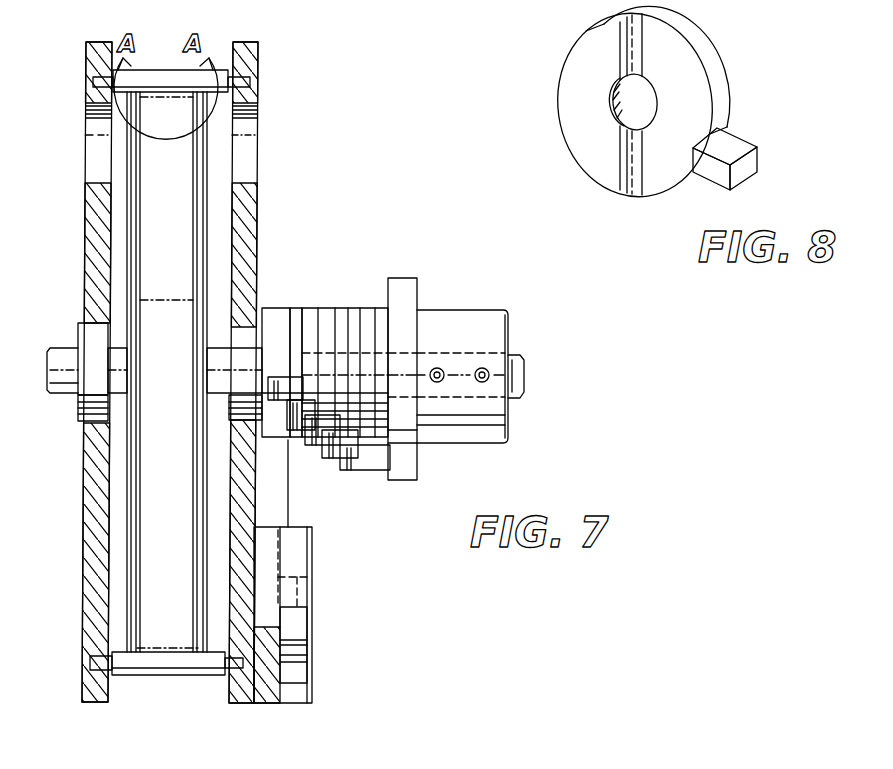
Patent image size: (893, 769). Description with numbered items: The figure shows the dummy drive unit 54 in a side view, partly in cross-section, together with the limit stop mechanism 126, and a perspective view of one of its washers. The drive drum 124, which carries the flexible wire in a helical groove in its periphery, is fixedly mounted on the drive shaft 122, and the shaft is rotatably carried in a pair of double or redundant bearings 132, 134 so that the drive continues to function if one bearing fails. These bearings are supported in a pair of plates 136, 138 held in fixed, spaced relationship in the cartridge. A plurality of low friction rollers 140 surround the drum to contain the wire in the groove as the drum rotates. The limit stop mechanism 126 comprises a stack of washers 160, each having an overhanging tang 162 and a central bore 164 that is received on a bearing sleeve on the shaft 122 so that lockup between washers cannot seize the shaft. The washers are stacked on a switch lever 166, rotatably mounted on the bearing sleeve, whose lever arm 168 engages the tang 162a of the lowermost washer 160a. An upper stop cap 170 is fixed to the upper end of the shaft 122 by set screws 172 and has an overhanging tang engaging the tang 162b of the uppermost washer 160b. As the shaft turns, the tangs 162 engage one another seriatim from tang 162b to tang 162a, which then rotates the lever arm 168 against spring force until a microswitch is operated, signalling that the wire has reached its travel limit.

In FIG. 7, the dummy drive unit 54 is at (294, 109).
In FIG. 7, the drive shaft 122 is at (61, 362).
In FIG. 7, the drive drum 124 is at (131, 155).
In FIG. 7, the limit stop mechanism 126 is at (553, 411).
In FIG. 7, the double bearing 132 is at (84, 402).
In FIG. 7, the double bearing 134 is at (244, 407).
In FIG. 7, the plate 136 is at (95, 573).
In FIG. 7, the plate 138 is at (248, 197).
In FIG. 7, the rollers 140 is at (190, 668).
In FIG. 7, the washers 160 is at (366, 311).
In FIG. 8, the washers 160 is at (746, 102).
In FIG. 7, the lowermost washer 160a is at (304, 309).
In FIG. 7, the uppermost washer 160b is at (386, 328).
In FIG. 7, the tang 162 is at (340, 457).
In FIG. 8, the tang 162 is at (750, 164).
In FIG. 7, the tang of lowermost washer 162a is at (282, 388).
In FIG. 7, the tang of uppermost washer 162b is at (386, 448).
In FIG. 8, the central bore 164 is at (615, 82).
In FIG. 7, the switch lever 166 is at (272, 309).
In FIG. 7, the lever arm 168 is at (272, 492).
In FIG. 7, the upper stop cap 170 is at (494, 320).
In FIG. 7, the set screws 172 is at (482, 367).